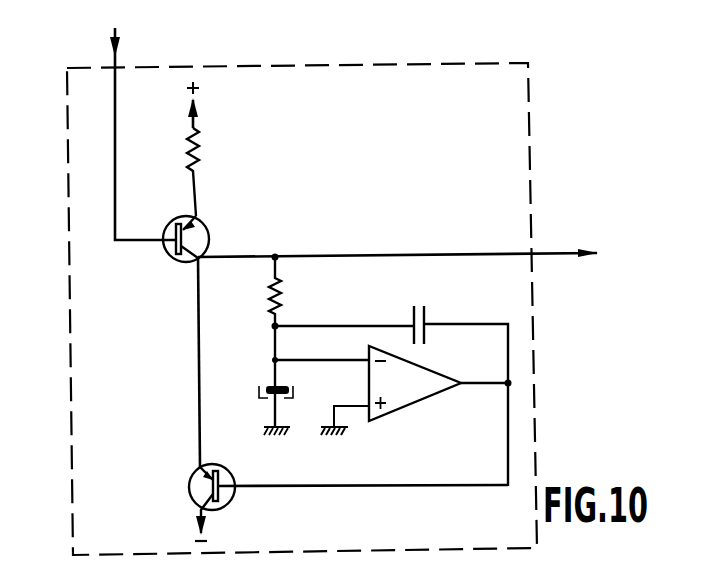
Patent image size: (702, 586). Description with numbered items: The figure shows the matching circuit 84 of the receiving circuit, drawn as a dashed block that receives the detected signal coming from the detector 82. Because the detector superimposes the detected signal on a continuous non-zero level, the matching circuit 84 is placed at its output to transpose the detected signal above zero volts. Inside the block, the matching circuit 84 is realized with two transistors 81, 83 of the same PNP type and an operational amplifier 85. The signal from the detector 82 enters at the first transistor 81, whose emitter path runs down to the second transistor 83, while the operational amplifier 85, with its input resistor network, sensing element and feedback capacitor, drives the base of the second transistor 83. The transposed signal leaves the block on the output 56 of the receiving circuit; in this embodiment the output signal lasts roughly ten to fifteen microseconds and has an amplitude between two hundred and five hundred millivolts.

The detector 82 is at (98, 134).
The matching circuit 84 is at (437, 64).
The transistor 81 is at (167, 250).
The transistor 83 is at (197, 481).
The operational amplifier 85 is at (404, 392).
The output 56 is at (412, 237).